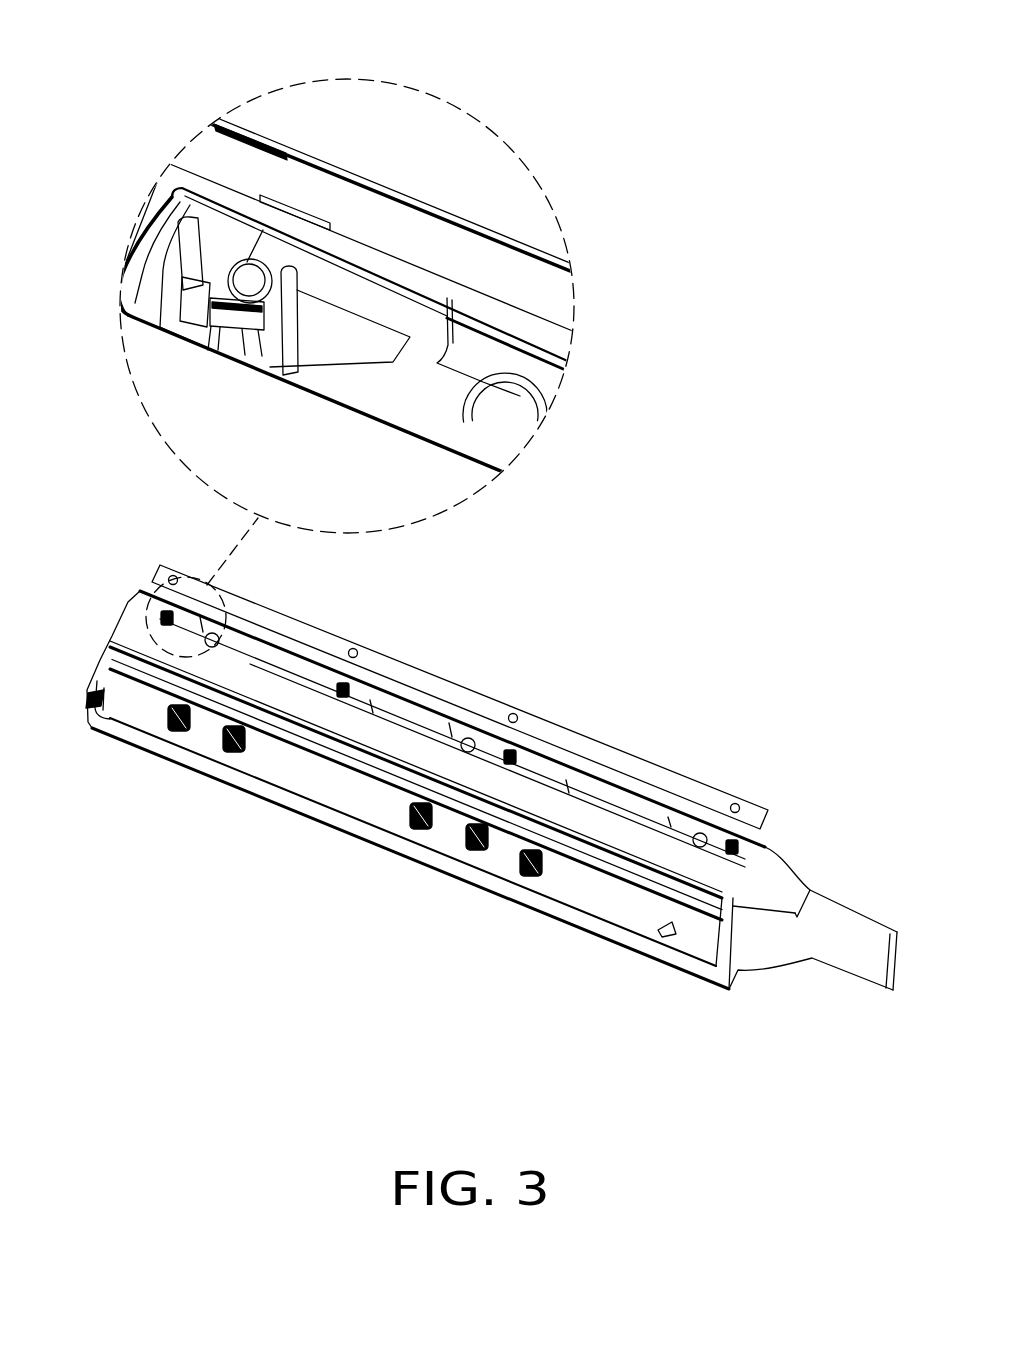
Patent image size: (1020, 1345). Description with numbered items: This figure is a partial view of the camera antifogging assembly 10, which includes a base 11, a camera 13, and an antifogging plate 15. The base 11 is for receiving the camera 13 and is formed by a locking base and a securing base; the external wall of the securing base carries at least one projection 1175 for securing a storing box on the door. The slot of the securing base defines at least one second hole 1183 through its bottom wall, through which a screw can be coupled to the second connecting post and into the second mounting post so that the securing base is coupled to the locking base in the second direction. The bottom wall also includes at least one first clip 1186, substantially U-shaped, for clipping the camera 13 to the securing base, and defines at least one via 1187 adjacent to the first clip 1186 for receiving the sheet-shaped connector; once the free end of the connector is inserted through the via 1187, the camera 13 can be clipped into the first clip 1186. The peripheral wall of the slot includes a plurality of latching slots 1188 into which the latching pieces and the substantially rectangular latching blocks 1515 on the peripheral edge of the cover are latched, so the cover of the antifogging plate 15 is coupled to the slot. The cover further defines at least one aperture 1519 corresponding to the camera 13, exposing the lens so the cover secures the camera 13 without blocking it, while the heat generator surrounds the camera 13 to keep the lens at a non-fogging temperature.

The camera antifogging assembly 10 is at (260, 44).
The base 11 is at (145, 713).
The camera 13 is at (243, 258).
The antifogging plate 15 is at (460, 697).
The projection 1175 is at (178, 730).
The second hole 1183 is at (512, 428).
The first clip 1186 is at (232, 353).
The via 1187 is at (353, 323).
The latching slot 1188 is at (510, 368).
The latching block 1515 is at (213, 122).
The aperture 1519 is at (518, 715).